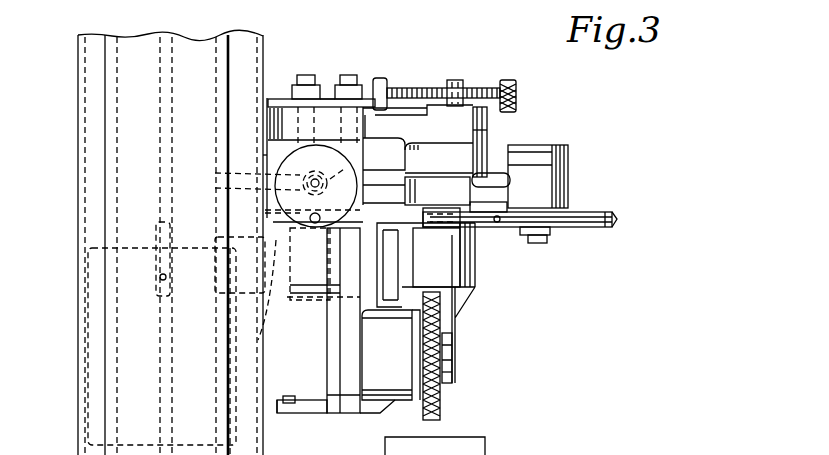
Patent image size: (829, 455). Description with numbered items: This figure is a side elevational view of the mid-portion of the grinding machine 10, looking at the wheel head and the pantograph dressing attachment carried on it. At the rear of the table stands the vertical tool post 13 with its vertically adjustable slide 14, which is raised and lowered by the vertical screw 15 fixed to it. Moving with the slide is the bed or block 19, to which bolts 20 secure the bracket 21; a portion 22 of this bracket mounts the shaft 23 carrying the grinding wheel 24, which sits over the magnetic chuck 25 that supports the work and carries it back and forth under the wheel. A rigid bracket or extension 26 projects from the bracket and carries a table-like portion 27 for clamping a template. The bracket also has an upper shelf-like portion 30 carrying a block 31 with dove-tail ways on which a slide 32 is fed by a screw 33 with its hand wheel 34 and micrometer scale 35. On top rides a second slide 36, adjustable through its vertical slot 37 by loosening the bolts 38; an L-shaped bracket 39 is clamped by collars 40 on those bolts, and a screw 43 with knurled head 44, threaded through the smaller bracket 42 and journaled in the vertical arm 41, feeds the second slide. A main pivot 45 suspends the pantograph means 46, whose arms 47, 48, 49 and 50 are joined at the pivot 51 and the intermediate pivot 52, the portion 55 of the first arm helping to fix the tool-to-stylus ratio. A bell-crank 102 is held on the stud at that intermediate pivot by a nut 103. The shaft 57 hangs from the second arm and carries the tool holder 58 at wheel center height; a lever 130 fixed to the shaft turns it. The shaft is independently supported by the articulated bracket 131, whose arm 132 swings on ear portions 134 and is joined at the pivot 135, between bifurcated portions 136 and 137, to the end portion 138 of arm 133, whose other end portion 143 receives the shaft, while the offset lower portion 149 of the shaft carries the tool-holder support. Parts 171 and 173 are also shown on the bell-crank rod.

The grinding machine 10 is at (58, 405).
The vertical tool post 13 is at (75, 196).
The slide 14 is at (133, 248).
The vertical screw 15 is at (162, 72).
The bed or block 19 is at (273, 418).
The bolts 20 is at (285, 300).
The bracket 21 is at (343, 320).
The portion 22 is at (387, 355).
The shaft 23 is at (420, 396).
The grinding wheel 24 is at (440, 418).
The magnetic chuck 25 is at (485, 449).
The bracket or extension 26 is at (465, 318).
The table-like portion 27 is at (215, 228).
The upper shelf-like portion 30 is at (268, 212).
The block or portion 31 is at (228, 190).
The slide 32 is at (267, 170).
The screw 33 is at (222, 178).
The hand wheel 34 is at (314, 152).
The micrometer scale 35 is at (310, 180).
The second slide 36 is at (405, 112).
The vertical slot 37 is at (357, 128).
The bolts 38 is at (307, 75).
The L-shaped bracket 39 is at (281, 99).
The collars 40 is at (323, 92).
The vertical arm 41 is at (381, 79).
The smaller bracket 42 is at (460, 80).
The screw 43 is at (426, 92).
The knurled head 44 is at (516, 94).
The main pivot 45 is at (488, 126).
The pantograph means 46 is at (584, 162).
The pantograph arm 47 is at (384, 154).
The pantograph arm 48 is at (488, 202).
The pantograph arm 49 is at (492, 171).
The pantograph arm 50 is at (384, 194).
The pivot 51 is at (489, 144).
The intermediate pivot 52 is at (548, 163).
The portion of arm 55 is at (439, 158).
The shaft 57 is at (455, 349).
The tool holder 58 is at (455, 371).
The bell-crank 102 is at (588, 207).
The nut 103 is at (547, 243).
The lever 130 is at (446, 212).
The articulated bracket 131 is at (480, 279).
The arm 132 is at (351, 326).
The arm 133 is at (402, 250).
The ear portions 134 is at (292, 274).
The pivot 135 is at (398, 320).
The portion 136 is at (408, 220).
The portion 137 is at (408, 310).
The end portion 138 is at (395, 270).
The end portion 143 is at (477, 265).
The lower portion 149 is at (462, 372).
The arm 171 is at (552, 231).
The rod end 173 is at (617, 219).